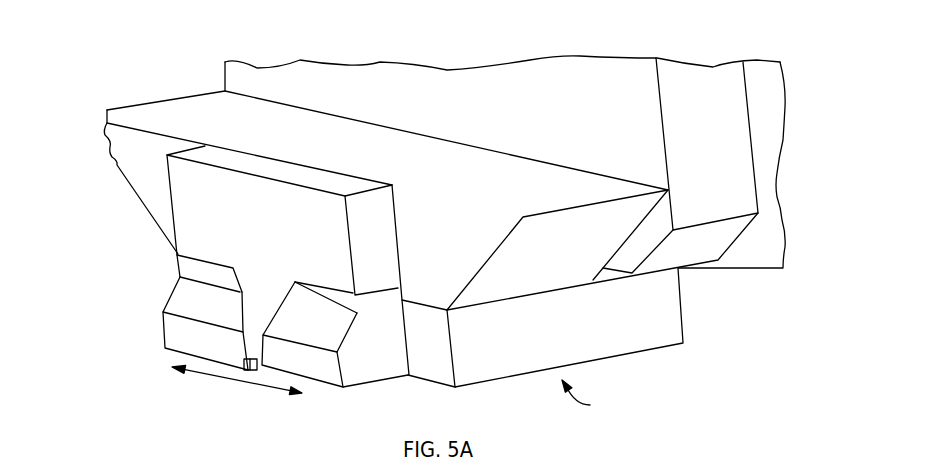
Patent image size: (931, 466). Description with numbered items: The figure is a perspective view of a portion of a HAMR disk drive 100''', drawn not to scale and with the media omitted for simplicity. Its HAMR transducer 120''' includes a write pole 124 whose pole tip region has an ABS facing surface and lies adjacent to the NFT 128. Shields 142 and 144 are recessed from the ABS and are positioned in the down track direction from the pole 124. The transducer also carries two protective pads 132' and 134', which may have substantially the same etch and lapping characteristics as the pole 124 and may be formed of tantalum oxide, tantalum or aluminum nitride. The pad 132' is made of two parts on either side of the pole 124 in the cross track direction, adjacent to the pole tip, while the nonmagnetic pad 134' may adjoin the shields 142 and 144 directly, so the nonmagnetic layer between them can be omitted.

The HAMR disk drive 100''' is at (434, 228).
The HAMR transducer 120''' is at (434, 228).
The shield 142 is at (114, 171).
The write pole 124 is at (172, 210).
The protective pad 132' is at (245, 349).
The NFT 128 is at (250, 372).
The protective pad 134' is at (574, 329).
The shield 144 is at (740, 235).